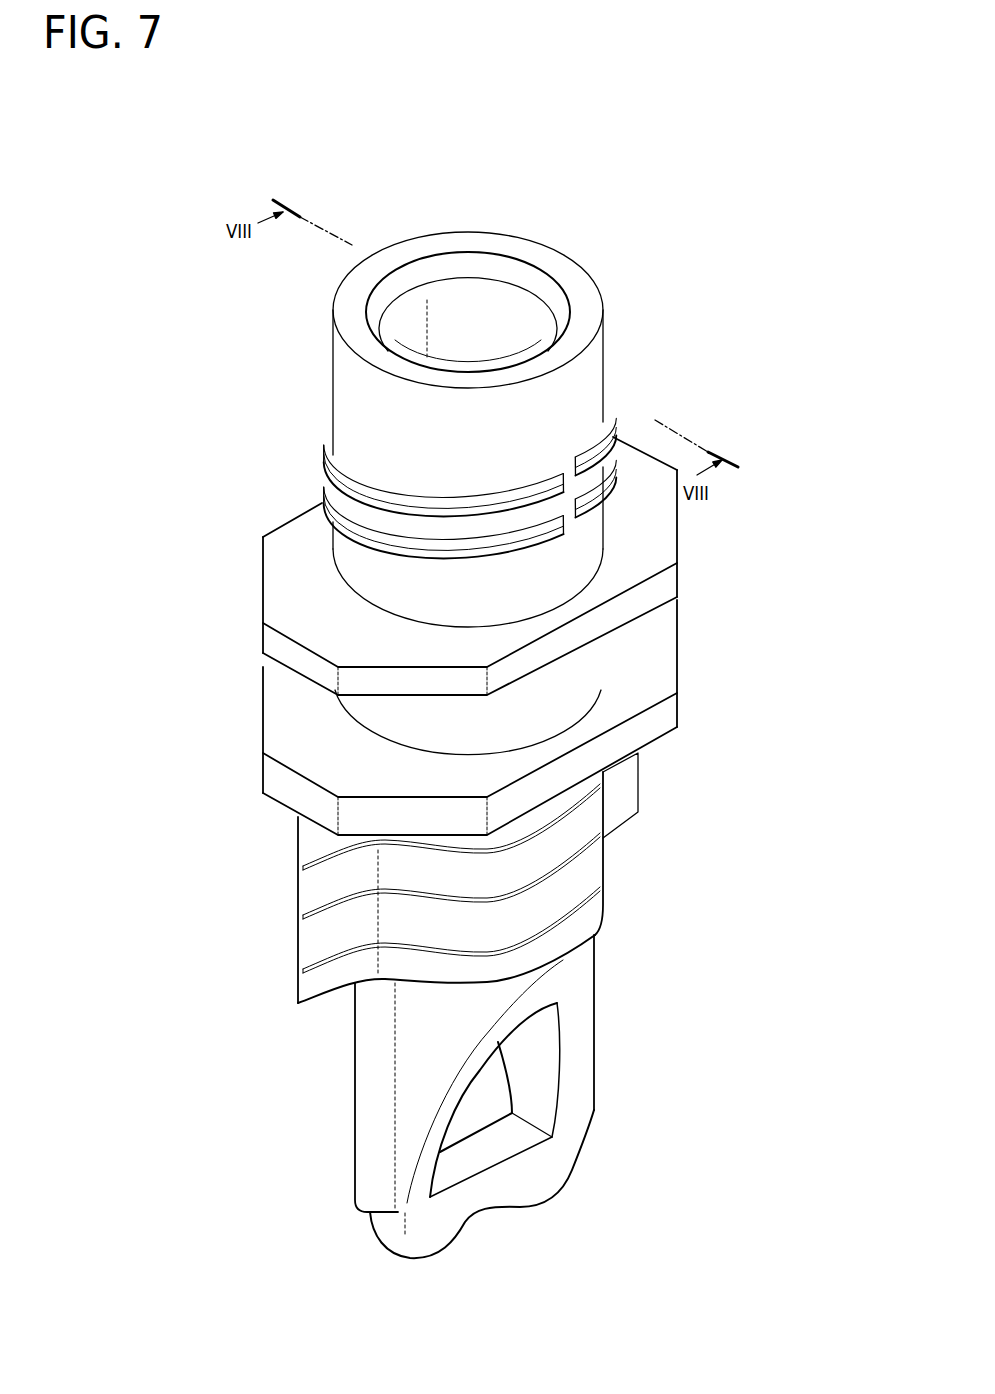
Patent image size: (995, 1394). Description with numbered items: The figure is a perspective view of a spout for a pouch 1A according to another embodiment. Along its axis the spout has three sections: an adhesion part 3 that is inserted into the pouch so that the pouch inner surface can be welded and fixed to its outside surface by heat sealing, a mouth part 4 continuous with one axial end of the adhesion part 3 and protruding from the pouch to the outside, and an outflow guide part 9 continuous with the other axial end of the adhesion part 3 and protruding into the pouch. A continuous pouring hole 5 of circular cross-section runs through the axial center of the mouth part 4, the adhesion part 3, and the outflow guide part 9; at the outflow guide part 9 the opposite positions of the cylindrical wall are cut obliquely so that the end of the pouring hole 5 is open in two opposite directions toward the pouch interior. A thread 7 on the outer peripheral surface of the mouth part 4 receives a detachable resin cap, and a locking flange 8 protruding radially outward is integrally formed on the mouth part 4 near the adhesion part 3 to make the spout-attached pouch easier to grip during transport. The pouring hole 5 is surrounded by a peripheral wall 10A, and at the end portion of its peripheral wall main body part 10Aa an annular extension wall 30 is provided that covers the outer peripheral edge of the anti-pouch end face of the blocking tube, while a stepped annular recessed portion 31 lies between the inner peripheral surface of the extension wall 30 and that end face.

The spout for a pouch 1A is at (612, 262).
The adhesion part 3 is at (407, 880).
The mouth part 4 is at (372, 572).
The pouring hole 5 is at (510, 332).
The thread 7 is at (608, 413).
The locking flange 8 is at (660, 578).
The outflow guide part 9 is at (413, 1052).
The peripheral wall 10A is at (595, 368).
The peripheral wall main body part 10Aa is at (430, 432).
The annular extension wall 30 is at (563, 278).
The annular recessed portion 31 is at (533, 290).